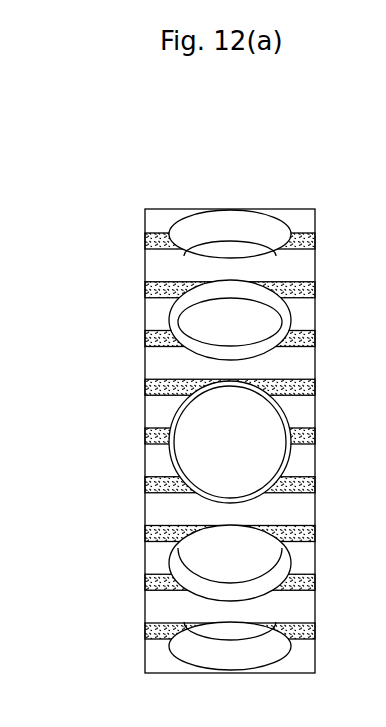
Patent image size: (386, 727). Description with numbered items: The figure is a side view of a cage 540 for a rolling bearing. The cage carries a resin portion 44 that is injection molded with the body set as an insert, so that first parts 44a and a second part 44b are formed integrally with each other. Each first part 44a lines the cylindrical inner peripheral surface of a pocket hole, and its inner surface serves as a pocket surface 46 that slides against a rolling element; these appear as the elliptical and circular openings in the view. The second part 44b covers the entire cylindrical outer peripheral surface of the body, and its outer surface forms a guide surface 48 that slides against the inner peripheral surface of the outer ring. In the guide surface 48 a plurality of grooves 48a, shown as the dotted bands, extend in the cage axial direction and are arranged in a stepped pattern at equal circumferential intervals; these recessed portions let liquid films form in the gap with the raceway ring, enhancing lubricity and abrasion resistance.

The cage 540 is at (288, 205).
The resin portion 44 is at (299, 268).
The first part 44a is at (190, 228).
The second part 44b is at (282, 363).
The pocket surface 46 is at (227, 228).
The guide surface 48 is at (289, 509).
The groove 48a is at (148, 288).